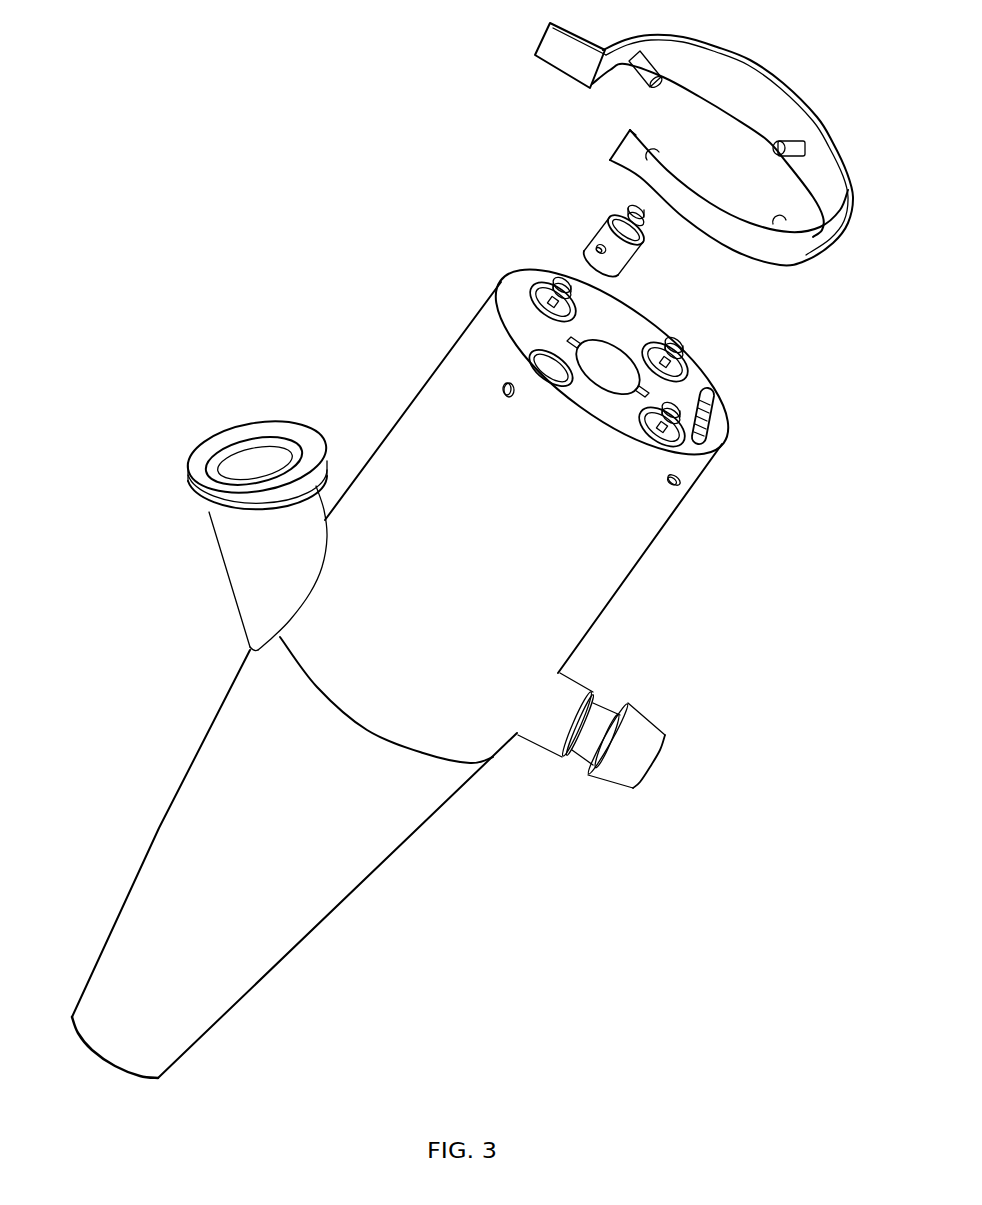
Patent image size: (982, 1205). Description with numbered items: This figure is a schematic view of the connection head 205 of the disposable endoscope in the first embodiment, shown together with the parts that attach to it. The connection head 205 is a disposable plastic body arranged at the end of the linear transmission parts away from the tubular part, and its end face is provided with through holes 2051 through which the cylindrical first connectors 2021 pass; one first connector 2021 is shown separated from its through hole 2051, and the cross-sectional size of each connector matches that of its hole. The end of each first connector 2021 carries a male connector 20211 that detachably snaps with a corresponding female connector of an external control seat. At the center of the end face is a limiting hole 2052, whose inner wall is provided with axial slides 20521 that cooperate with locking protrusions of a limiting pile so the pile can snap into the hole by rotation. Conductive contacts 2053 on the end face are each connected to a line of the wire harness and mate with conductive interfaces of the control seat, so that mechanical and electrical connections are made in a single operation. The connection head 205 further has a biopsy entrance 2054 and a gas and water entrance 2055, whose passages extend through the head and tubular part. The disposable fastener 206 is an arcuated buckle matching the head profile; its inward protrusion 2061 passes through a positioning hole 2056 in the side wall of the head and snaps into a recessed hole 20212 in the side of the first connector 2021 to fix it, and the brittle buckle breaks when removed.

The connection head 205 is at (317, 913).
The biopsy entrance 2054 is at (200, 462).
The gas and water entrance 2055 is at (633, 772).
The through hole 2051 is at (515, 367).
The limiting hole 2052 is at (610, 360).
The axial slide 20521 is at (565, 332).
The conductive contact 2053 is at (713, 415).
The positioning hole 2056 is at (673, 487).
The male connector 20211 is at (680, 357).
The first connector 2021 is at (560, 225).
The recessed hole 20212 is at (607, 213).
The disposable fastener 206 is at (537, 43).
The inward protrusion 2061 is at (653, 67).